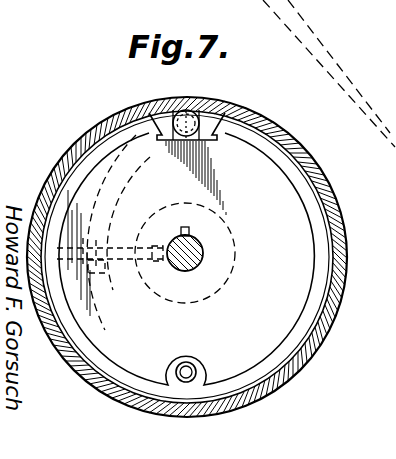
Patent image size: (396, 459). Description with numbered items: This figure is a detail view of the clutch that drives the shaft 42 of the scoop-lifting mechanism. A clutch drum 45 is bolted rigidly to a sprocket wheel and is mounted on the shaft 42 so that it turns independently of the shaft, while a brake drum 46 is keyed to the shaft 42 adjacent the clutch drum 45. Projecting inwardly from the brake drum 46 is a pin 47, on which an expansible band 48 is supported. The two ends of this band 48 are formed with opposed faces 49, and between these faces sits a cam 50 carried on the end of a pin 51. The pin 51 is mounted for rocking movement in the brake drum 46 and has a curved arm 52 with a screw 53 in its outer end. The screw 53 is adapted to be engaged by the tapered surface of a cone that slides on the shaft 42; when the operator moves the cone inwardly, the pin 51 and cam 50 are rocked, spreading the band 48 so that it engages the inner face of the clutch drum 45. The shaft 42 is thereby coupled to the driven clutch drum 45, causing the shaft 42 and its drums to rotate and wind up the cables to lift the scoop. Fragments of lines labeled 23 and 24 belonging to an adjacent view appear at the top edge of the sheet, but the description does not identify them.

The shaft 42 is at (203, 266).
The clutch drum 45 is at (338, 226).
The brake drum 46 is at (270, 182).
The pin 47 is at (193, 371).
The expansible band 48 is at (318, 236).
The opposed faces 49 is at (150, 118).
The cam 50 is at (189, 110).
The pin 51 is at (172, 145).
The curved arm 52 is at (122, 198).
The screw 53 is at (125, 262).
The line 23 is at (353, 0).
The line 24 is at (313, 73).